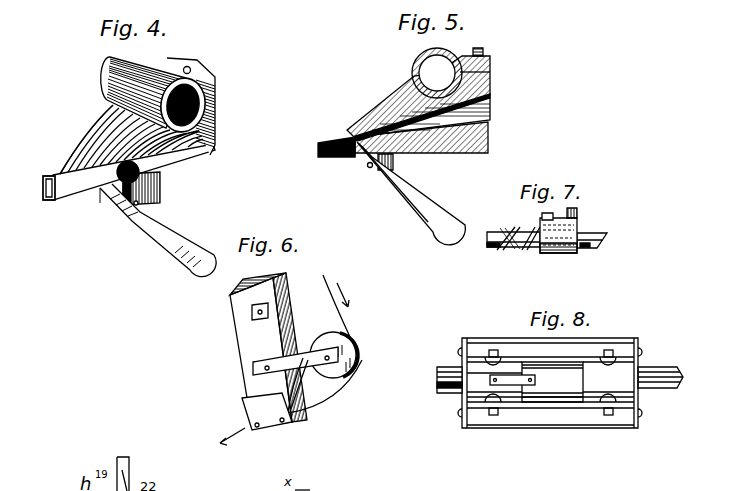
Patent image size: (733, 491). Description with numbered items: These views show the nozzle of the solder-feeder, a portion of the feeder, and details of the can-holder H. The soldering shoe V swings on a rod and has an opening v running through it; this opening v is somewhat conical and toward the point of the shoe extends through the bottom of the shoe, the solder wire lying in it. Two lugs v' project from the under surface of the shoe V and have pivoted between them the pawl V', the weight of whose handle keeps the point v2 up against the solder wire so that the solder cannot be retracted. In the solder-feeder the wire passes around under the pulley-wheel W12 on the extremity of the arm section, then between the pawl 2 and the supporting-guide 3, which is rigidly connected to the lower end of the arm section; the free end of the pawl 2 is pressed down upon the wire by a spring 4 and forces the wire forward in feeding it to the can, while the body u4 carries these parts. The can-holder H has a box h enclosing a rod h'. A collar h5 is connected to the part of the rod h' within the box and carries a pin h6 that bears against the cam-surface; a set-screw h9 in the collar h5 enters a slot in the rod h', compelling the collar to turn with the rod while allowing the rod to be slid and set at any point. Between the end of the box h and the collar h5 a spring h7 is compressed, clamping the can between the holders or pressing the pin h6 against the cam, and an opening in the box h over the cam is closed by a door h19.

In FIG. 4, the soldering shoe V is at (129, 128).
In FIG. 5, the soldering shoe V is at (410, 94).
In FIG. 4, the opening v is at (41, 202).
In FIG. 5, the opening v is at (396, 141).
In FIG. 4, the lugs v' is at (131, 195).
In FIG. 5, the lugs v' is at (400, 166).
In FIG. 4, the pawl V' is at (158, 230).
In FIG. 5, the pawl V' is at (411, 193).
In FIG. 5, the point v2 is at (355, 160).
In FIG. 6, the pulley-wheel W12 is at (337, 337).
In FIG. 6, the body block u4 is at (268, 350).
In FIG. 6, the spring 4 is at (258, 387).
In FIG. 6, the pawl 2 is at (325, 385).
In FIG. 6, the supporting-guide 3 is at (300, 418).
In FIG. 8, the box h is at (610, 352).
In FIG. 7, the rod h' is at (564, 238).
In FIG. 8, the rod h' is at (577, 349).
In FIG. 7, the collar h5 is at (567, 243).
In FIG. 7, the pin h6 is at (578, 215).
In FIG. 7, the spring h7 is at (516, 232).
In FIG. 7, the set-screw h9 is at (548, 217).
In FIG. 8, the door h19 is at (552, 377).
In FIG. 8, the can-holder H is at (550, 400).